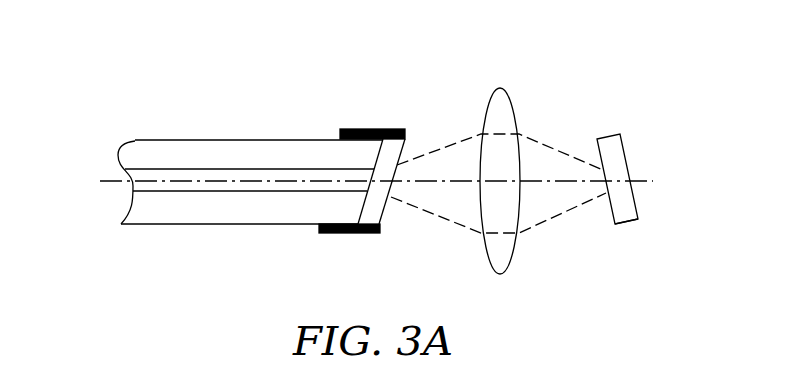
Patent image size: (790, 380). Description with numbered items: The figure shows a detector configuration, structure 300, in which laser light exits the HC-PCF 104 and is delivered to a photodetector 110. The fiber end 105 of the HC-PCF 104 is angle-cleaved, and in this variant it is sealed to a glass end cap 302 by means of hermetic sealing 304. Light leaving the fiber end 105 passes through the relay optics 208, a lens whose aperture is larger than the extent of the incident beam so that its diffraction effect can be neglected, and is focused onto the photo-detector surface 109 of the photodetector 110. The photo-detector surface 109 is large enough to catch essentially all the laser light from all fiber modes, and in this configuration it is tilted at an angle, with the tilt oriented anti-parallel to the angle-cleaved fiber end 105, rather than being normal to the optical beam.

The structure 300 is at (126, 89).
The HC-PCF 104 is at (209, 140).
The fiber end 105 is at (378, 147).
The glass end cap 302 is at (381, 208).
The hermetic sealing 304 is at (323, 233).
The relay optics 208 is at (500, 87).
The photodetector 110 is at (617, 134).
The photo-detector surface 109 is at (613, 214).